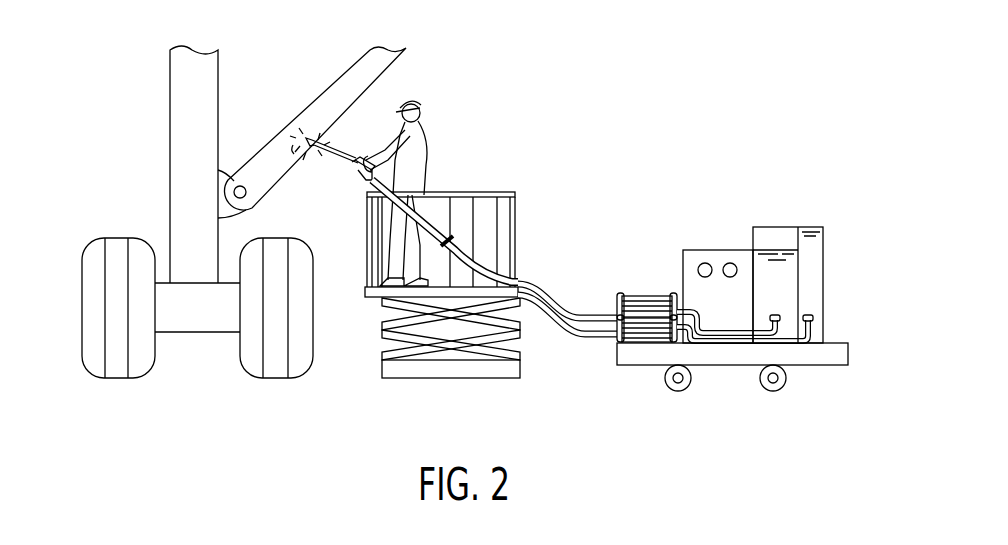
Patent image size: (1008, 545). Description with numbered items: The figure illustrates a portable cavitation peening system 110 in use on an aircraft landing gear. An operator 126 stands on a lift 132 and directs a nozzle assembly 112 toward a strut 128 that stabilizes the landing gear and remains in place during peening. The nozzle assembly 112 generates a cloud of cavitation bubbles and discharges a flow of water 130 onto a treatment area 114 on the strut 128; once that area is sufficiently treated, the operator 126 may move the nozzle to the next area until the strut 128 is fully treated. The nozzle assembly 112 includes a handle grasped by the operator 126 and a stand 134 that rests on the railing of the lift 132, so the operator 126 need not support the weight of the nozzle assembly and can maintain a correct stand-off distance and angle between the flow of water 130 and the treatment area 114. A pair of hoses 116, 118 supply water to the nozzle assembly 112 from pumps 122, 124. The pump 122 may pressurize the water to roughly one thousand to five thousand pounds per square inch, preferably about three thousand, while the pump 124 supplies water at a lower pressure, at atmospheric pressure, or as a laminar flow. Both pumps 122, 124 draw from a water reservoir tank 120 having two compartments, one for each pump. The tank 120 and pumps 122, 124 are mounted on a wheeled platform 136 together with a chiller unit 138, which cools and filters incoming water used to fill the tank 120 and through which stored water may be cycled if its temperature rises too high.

The portable cavitation peening system 110 is at (615, 142).
The nozzle assembly 112 is at (357, 168).
The treatment area 114 is at (302, 160).
The hose 116 is at (588, 314).
The hose 118 is at (573, 330).
The water reservoir tank 120 is at (780, 227).
The pump 122 is at (648, 296).
The pump 124 is at (640, 344).
The operator 126 is at (422, 175).
The strut 128 is at (320, 118).
The flow of water 130 is at (346, 158).
The lift 132 is at (517, 240).
The stand 134 is at (366, 196).
The wheeled platform 136 is at (833, 350).
The chiller unit 138 is at (710, 250).